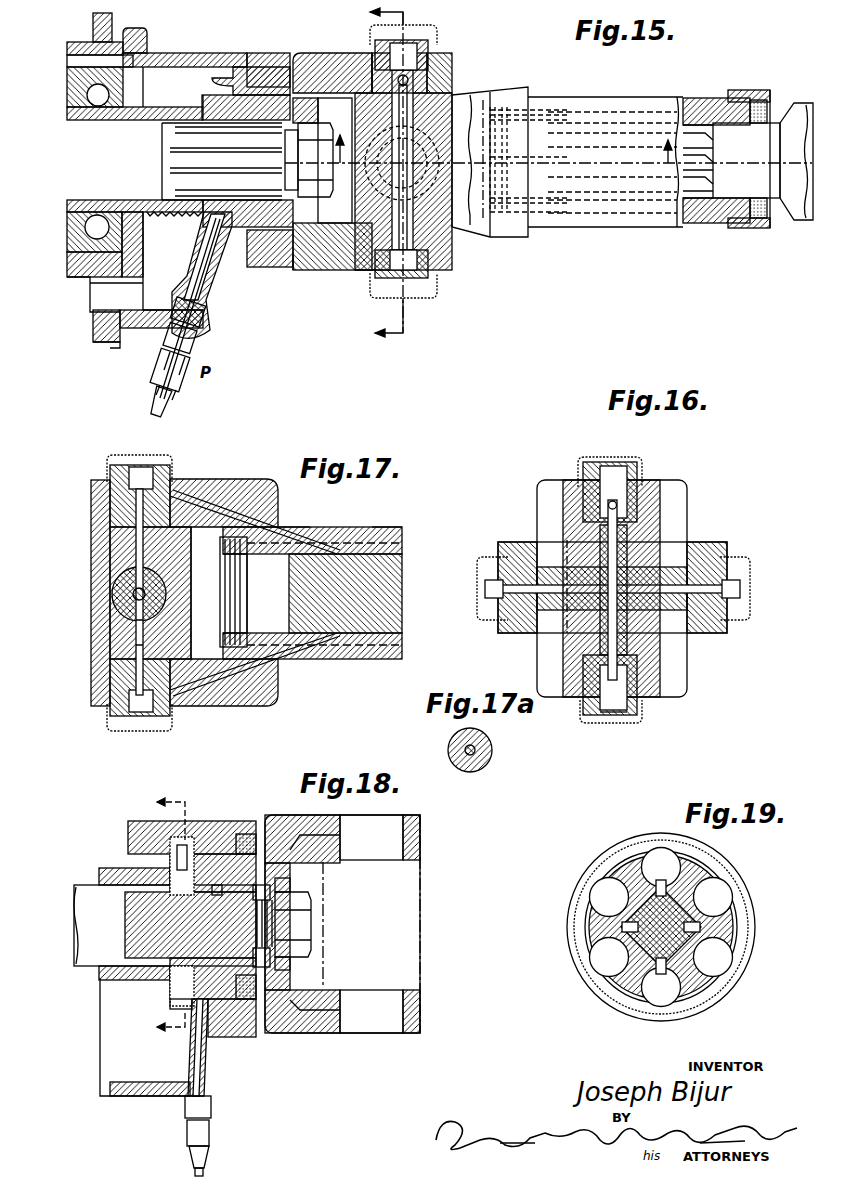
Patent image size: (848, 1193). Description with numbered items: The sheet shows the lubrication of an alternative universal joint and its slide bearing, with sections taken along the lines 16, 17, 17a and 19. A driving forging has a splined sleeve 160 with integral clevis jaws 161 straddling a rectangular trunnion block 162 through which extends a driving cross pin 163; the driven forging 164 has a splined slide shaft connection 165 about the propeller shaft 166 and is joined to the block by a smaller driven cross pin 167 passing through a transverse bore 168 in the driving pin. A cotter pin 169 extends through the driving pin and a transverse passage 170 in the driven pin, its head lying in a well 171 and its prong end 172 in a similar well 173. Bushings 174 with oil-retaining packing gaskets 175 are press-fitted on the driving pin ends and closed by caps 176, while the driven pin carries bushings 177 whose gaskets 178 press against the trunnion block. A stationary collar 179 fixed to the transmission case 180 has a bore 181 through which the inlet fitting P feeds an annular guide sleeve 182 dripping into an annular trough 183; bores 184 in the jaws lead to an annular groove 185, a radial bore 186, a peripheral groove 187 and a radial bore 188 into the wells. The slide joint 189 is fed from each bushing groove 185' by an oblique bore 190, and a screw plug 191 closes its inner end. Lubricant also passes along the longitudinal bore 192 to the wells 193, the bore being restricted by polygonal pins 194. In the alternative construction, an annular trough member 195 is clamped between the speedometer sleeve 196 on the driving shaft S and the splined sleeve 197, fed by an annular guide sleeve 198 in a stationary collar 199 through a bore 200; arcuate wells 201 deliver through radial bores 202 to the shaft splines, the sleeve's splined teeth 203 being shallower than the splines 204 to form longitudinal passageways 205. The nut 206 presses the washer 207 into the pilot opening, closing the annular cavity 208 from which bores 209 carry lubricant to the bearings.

In FIG. 15, the splined sleeve 160 is at (233, 97).
In FIG. 15, the clevis jaws 161 is at (312, 53).
In FIG. 15, the rectangular trunnion block 162 is at (512, 100).
In FIG. 17, the rectangular trunnion block 162 is at (270, 518).
In FIG. 15, the driving cross pin 163 is at (452, 96).
In FIG. 16, the driving cross pin 163 is at (660, 640).
In FIG. 15, the driven forging 164 is at (592, 97).
In FIG. 17, the driven forging 164 is at (272, 500).
In FIG. 15, the splined slide shaft connection 165 is at (786, 160).
In FIG. 17, the splined slide shaft connection 165 is at (372, 554).
In FIG. 17, the propeller shaft 166 is at (380, 570).
In FIG. 17, the driven cross pin 167 is at (125, 560).
In FIG. 17A, the driven cross pin 167 is at (492, 751).
In FIG. 17, the transverse bore 168 is at (133, 594).
In FIG. 15, the cotter pin 169 is at (430, 73).
In FIG. 17, the transverse passage 170 is at (135, 610).
In FIG. 16, the transverse passage 170 is at (617, 552).
In FIG. 15, the well 171 is at (428, 50).
In FIG. 16, the well 171 is at (620, 478).
In FIG. 16, the prong end 172 is at (612, 702).
In FIG. 16, the well 173 is at (625, 712).
In FIG. 15, the bushings 174 is at (440, 62).
In FIG. 15, the oil-retaining packing gasket 175 is at (370, 62).
In FIG. 15, the caps 176 is at (437, 30).
In FIG. 16, the caps 176 is at (600, 458).
In FIG. 17, the bushings 177 is at (178, 502).
In FIG. 17, the gaskets 178 is at (93, 525).
In FIG. 15, the stationary collar 179 is at (210, 322).
In FIG. 15, the transmission case 180 is at (95, 330).
In FIG. 15, the bore 181 is at (206, 262).
In FIG. 15, the annular guide sleeve 182 is at (260, 268).
In FIG. 15, the annular trough 183 is at (292, 272).
In FIG. 15, the bores 184 is at (336, 250).
In FIG. 15, the annular groove 185 is at (450, 266).
In FIG. 17, the bushing groove 185' is at (256, 566).
In FIG. 15, the radial bore 186 is at (365, 282).
In FIG. 15, the peripheral groove 187 is at (437, 283).
In FIG. 15, the radial bore 188 is at (378, 290).
In FIG. 15, the slide joint 189 is at (705, 98).
In FIG. 17, the oblique bore 190 is at (305, 527).
In FIG. 17, the screw plug 191 is at (232, 592).
In FIG. 17, the longitudinal bore 192 is at (128, 580).
In FIG. 17, the wells 193 is at (139, 472).
In FIG. 17, the polygonal pins 194 is at (133, 630).
In FIG. 17A, the polygonal pins 194 is at (474, 762).
In FIG. 18, the annular trough member 195 is at (172, 838).
In FIG. 19, the annular trough member 195 is at (752, 940).
In FIG. 18, the speedometer sleeve 196 is at (106, 868).
In FIG. 18, the splined sleeve 197 is at (210, 862).
In FIG. 18, the annular guide sleeve 198 is at (176, 1003).
In FIG. 18, the stationary collar 199 is at (222, 1037).
In FIG. 18, the bore 200 is at (186, 1055).
In FIG. 18, the arcuate wells 201 is at (175, 983).
In FIG. 19, the arcuate wells 201 is at (664, 868).
In FIG. 19, the radial bores 202 is at (695, 885).
In FIG. 19, the splined teeth 203 is at (650, 890).
In FIG. 19, the splines 204 is at (622, 860).
In FIG. 18, the longitudinal passageways 205 is at (222, 892).
In FIG. 19, the longitudinal passageways 205 is at (700, 915).
In FIG. 18, the nut 206 is at (292, 922).
In FIG. 18, the washer 207 is at (288, 884).
In FIG. 18, the annular cavity 208 is at (262, 952).
In FIG. 18, the bores 209 is at (300, 835).
In FIG. 18, the driving shaft S is at (100, 938).
In FIG. 18, the inlet fitting P is at (212, 1132).
In FIG. 15, the section line 16— 16 is at (400, 174).
In FIG. 15, the section line 17— 17 is at (498, 140).
In FIG. 16, the section line 17a— 17a is at (561, 588).
In FIG. 18, the section line 19— 19 is at (183, 915).